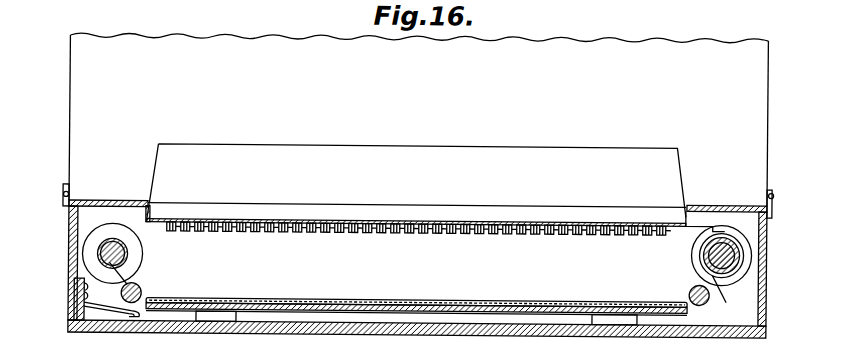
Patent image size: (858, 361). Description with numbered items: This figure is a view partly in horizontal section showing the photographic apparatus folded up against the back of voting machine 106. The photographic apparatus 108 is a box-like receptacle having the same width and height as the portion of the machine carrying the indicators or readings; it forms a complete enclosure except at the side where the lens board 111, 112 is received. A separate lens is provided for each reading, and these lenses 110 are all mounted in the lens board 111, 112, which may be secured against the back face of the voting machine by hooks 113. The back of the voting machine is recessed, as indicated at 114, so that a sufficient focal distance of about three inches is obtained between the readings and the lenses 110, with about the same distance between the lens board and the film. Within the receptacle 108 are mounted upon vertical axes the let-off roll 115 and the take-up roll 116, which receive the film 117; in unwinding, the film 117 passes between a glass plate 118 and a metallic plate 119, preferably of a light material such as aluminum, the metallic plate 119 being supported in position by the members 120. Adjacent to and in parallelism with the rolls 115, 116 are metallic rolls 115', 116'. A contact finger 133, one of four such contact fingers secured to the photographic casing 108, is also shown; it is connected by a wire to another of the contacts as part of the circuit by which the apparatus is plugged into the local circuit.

The back of voting machine 106 is at (772, 80).
The photographic apparatus 108 is at (87, 331).
The lenses 110 is at (245, 227).
The lens board 111 is at (150, 223).
The lens board 112 is at (113, 200).
The hooks 113 is at (66, 195).
The recess 114 is at (404, 156).
The let-off roll 115 is at (698, 255).
The metallic roll 115' is at (674, 289).
The take-up roll 116 is at (133, 253).
The metallic roll 116' is at (155, 282).
The film 117 is at (732, 299).
The glass plate 118 is at (524, 297).
The metallic plate 119 is at (460, 311).
The supporting members 120 is at (209, 313).
The contact finger 133 is at (76, 311).